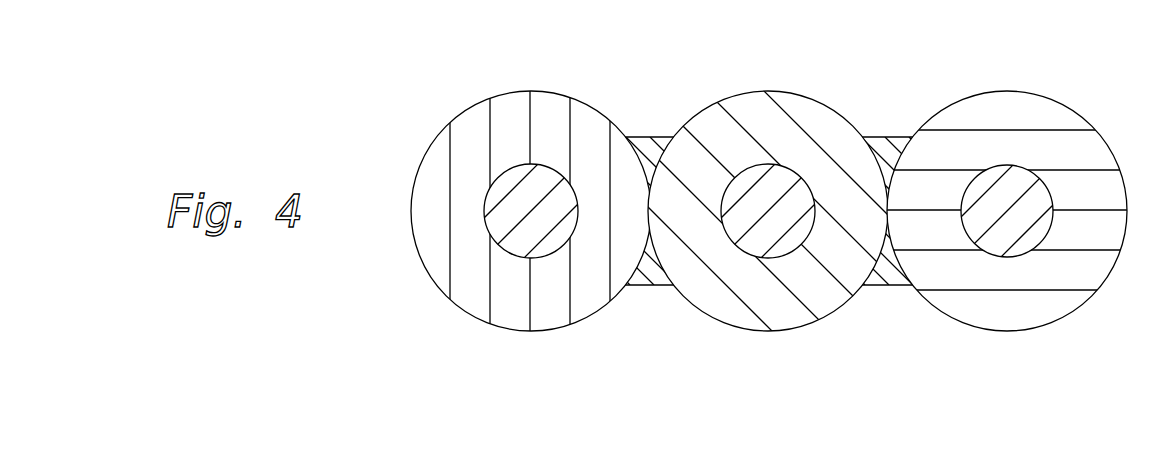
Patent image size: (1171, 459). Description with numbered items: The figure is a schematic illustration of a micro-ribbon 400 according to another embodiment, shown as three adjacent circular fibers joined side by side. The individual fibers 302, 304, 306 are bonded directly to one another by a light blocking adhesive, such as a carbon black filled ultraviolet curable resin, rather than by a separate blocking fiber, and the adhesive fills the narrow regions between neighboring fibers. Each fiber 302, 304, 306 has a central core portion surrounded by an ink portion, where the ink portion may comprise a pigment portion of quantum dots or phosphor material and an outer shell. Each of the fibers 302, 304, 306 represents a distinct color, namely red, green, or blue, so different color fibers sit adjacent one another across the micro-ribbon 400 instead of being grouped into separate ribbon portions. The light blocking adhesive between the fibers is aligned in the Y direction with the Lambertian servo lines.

The micro-ribbon 400 is at (369, 67).
The fiber 302 is at (531, 220).
The fiber 304 is at (769, 220).
The fiber 306 is at (1007, 220).